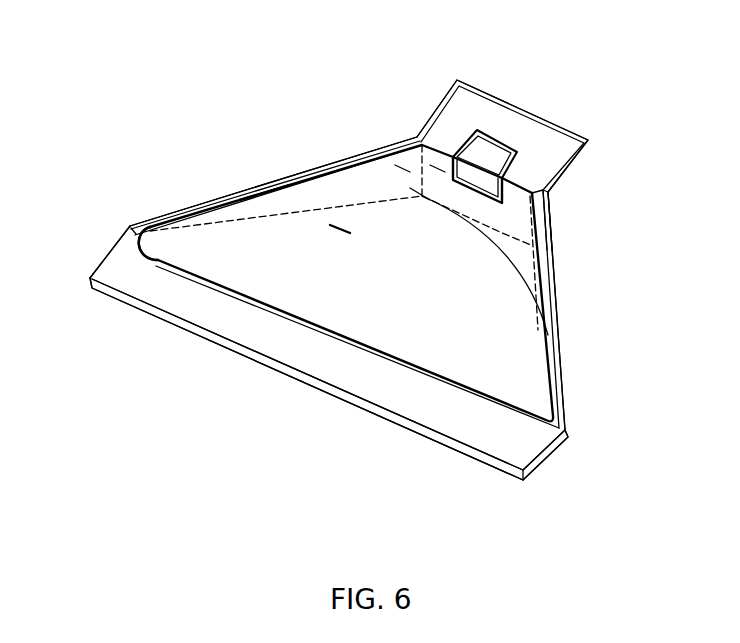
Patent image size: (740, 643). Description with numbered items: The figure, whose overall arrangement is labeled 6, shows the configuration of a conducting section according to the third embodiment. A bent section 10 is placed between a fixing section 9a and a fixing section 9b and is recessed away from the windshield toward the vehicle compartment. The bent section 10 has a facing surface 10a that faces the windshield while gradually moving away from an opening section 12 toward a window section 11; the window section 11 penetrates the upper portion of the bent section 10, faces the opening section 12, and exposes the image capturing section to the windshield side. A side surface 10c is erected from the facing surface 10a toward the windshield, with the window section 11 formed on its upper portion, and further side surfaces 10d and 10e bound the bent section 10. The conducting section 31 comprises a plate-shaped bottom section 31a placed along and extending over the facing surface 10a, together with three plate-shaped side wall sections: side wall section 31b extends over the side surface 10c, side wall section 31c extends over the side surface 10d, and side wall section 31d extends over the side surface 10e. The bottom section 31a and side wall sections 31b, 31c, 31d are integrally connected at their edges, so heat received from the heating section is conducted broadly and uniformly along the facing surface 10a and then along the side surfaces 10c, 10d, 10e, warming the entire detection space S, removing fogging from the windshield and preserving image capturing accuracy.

The conveyance guide 6 is at (170, 175).
The fixing section 9a is at (548, 143).
The fixing section 9b is at (200, 313).
The bent section 10 is at (500, 232).
The facing surface 10a is at (130, 232).
The side surface 10c is at (522, 180).
The side surface 10d is at (235, 191).
The side surface 10e is at (540, 270).
The window section 11 is at (483, 187).
The opening section 12 is at (265, 192).
The conducting section 31 is at (425, 56).
The bottom section 31a is at (343, 233).
The side wall section 31b is at (437, 170).
The side wall section 31c is at (402, 170).
The side wall section 31d is at (421, 195).
The detection space S is at (498, 288).